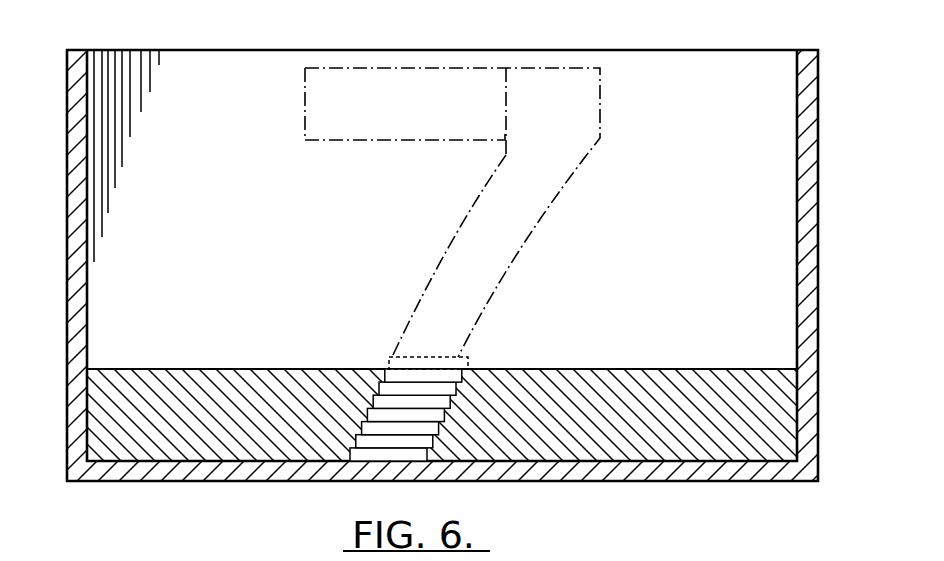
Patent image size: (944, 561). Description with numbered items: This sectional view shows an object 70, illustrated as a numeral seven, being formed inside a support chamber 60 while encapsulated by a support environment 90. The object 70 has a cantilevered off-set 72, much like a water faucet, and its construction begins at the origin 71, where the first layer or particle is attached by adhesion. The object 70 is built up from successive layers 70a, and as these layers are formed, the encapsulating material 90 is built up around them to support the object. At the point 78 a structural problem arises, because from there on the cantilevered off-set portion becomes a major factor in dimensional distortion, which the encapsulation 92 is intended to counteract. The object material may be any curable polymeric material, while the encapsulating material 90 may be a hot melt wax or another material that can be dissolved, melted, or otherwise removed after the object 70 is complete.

The support chamber 60 is at (160, 481).
The object 70 is at (604, 78).
The successive layers 70a is at (462, 356).
The origin 71 is at (348, 458).
The cantilevered off-set 72 is at (400, 68).
The point 78 is at (506, 70).
The support environment 90 is at (197, 345).
The encapsulation 92 is at (650, 370).